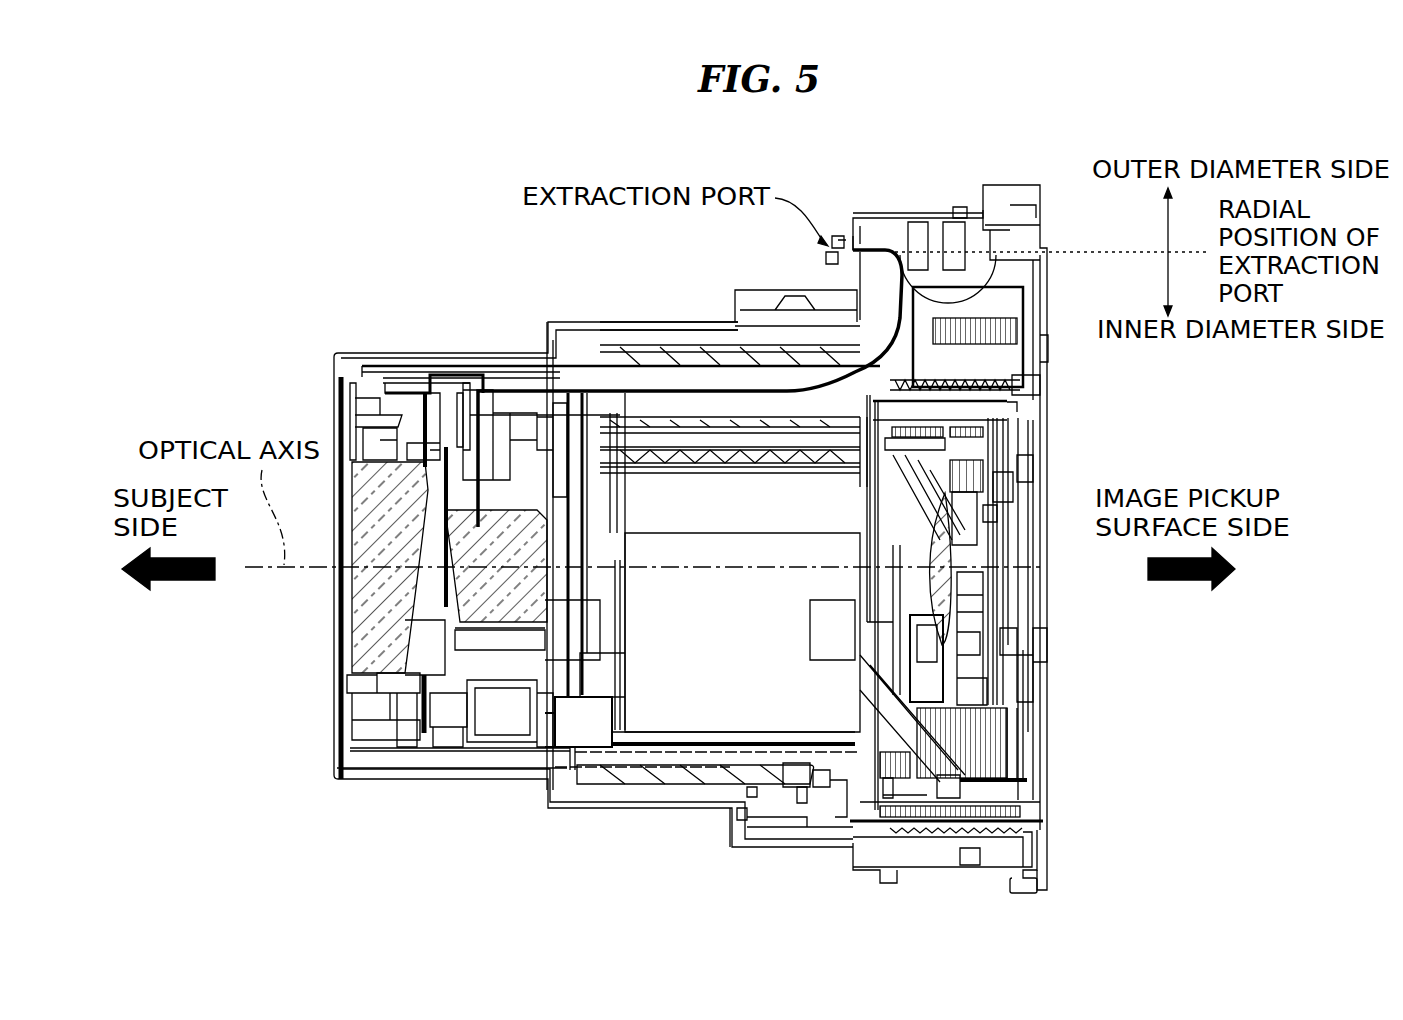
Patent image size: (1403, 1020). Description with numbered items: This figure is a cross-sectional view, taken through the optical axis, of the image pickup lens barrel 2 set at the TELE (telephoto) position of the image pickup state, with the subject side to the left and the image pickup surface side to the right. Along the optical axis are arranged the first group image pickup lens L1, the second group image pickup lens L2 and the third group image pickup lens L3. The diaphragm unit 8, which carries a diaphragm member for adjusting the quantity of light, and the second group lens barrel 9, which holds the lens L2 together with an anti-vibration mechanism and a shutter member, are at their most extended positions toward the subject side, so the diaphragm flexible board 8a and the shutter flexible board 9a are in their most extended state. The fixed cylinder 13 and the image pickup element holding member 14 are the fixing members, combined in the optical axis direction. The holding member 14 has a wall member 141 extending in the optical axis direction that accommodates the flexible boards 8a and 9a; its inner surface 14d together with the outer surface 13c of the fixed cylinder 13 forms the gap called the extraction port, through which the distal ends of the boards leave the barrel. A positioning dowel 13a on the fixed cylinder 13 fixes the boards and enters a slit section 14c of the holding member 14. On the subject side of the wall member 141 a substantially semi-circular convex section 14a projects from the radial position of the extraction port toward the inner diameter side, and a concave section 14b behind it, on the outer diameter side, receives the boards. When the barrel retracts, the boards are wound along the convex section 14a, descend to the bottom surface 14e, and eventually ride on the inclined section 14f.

The image pickup lens barrel 2 is at (382, 265).
The diaphragm unit 8 is at (457, 680).
The diaphragm flexible board 8a is at (737, 387).
The second group lens barrel 9 is at (555, 660).
The shutter flexible board 9a is at (777, 393).
The fixed cylinder 13 is at (762, 300).
The positioning dowel 13a is at (846, 242).
The outer surface 13c is at (830, 264).
The image pickup element holding member 14 is at (1033, 305).
The convex section 14a is at (945, 283).
The concave section 14b is at (1010, 240).
The slit section 14c is at (858, 230).
The inner surface 14d is at (868, 247).
The bottom surface 14e is at (1040, 350).
The inclined section 14f is at (1017, 383).
The wall member 141 is at (975, 240).
The first group image pickup lens L1 is at (370, 606).
The second group image pickup lens L2 is at (538, 605).
The third group image pickup lens L3 is at (935, 535).